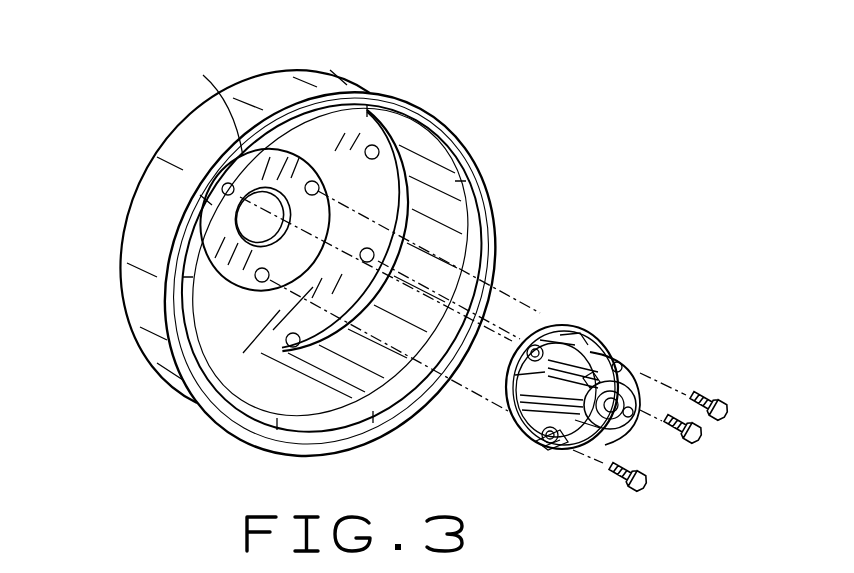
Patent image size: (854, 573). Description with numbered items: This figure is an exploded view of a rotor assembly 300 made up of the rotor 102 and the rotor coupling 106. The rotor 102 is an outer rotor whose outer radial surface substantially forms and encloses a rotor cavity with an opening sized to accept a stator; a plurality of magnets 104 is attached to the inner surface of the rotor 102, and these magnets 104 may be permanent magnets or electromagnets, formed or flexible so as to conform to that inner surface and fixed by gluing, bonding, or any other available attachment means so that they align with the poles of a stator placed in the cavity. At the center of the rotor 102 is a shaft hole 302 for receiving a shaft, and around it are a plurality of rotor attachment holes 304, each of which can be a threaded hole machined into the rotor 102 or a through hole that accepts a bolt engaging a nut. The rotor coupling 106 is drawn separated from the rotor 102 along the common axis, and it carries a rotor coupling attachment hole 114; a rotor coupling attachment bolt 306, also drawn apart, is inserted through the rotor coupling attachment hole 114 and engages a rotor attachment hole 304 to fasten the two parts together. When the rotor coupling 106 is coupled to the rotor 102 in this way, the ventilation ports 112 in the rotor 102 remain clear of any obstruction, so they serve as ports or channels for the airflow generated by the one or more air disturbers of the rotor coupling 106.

The rotor assembly 300 is at (560, 42).
The rotor 102 is at (377, 88).
The magnets 104 is at (247, 77).
The ventilation ports 112 is at (374, 246).
The shaft hole 302 is at (235, 218).
The rotor attachment holes 304 is at (247, 292).
The rotor coupling 106 is at (584, 327).
The rotor coupling attachment hole 114 is at (548, 448).
The rotor coupling attachment bolt 306 is at (727, 413).